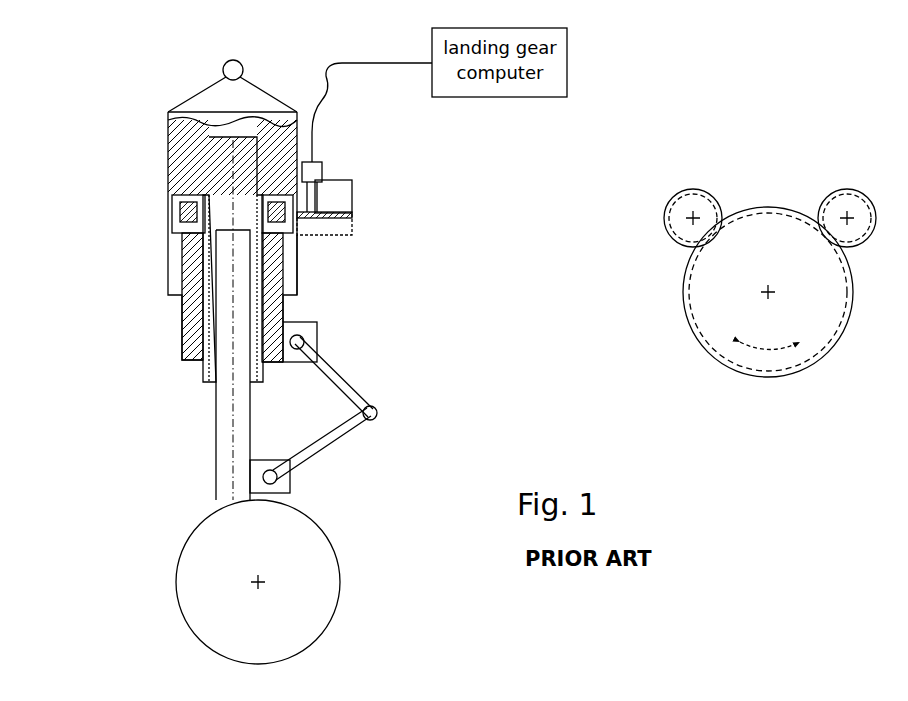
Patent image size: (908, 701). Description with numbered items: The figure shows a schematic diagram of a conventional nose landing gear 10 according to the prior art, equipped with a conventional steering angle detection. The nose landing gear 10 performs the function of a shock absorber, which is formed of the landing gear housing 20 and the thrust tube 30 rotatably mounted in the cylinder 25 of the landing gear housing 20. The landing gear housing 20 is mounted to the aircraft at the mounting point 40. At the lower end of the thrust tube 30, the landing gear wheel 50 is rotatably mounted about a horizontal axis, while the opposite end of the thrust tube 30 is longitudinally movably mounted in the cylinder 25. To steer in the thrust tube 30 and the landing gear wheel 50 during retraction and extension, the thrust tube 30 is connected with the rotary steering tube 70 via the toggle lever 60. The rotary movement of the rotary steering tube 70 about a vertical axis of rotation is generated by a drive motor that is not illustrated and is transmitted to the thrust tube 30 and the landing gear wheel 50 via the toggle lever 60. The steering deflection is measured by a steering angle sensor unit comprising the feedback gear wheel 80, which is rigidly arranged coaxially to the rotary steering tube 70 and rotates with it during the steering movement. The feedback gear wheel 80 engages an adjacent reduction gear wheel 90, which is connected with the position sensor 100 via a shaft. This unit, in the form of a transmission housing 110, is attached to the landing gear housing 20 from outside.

The nose landing gear 10 is at (127, 228).
The landing gear housing 20 is at (168, 147).
The cylinder 25 is at (218, 173).
The thrust tube 30 is at (218, 478).
The mounting point 40 is at (225, 63).
The landing gear wheel 50 is at (190, 578).
The toggle lever 60 is at (383, 400).
The rotary steering tube 70 is at (185, 330).
The feedback gear wheel 80 is at (300, 237).
The reduction gear wheel 90 is at (340, 212).
The position sensor 100 is at (322, 168).
The transmission housing 110 is at (352, 228).